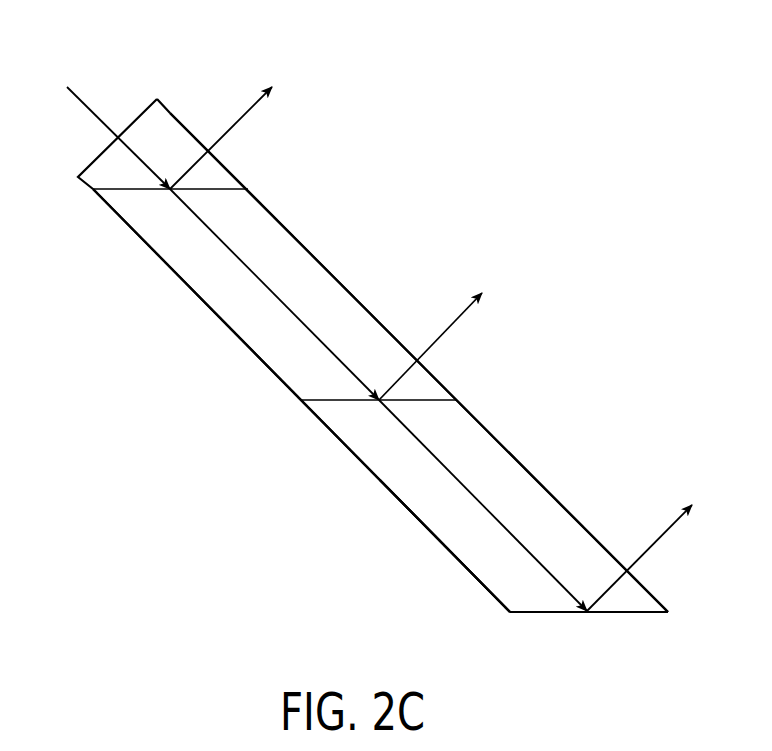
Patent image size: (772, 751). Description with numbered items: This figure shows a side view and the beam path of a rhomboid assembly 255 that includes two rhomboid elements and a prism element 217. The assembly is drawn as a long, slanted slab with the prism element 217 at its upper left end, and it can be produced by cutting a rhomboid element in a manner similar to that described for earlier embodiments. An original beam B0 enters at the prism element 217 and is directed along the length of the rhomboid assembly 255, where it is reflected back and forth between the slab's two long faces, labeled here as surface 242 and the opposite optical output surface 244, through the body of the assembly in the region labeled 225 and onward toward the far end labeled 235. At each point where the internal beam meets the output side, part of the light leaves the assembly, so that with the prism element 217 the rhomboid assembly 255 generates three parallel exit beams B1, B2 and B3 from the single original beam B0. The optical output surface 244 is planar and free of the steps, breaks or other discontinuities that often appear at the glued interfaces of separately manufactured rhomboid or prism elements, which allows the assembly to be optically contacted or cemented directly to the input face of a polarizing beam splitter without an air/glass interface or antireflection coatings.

The prism element 217 is at (170, 150).
The substrate / waveguide plate 225 is at (273, 318).
The optical output surface 244 is at (327, 267).
The lower surface coating 242 is at (323, 424).
The output region of substrate 235 is at (475, 538).
The rhomboid assembly 255 is at (640, 215).
The original beam B0 is at (303, 325).
The exit beam B1 is at (239, 114).
The exit beam B2 is at (450, 324).
The exit beam B3 is at (660, 535).